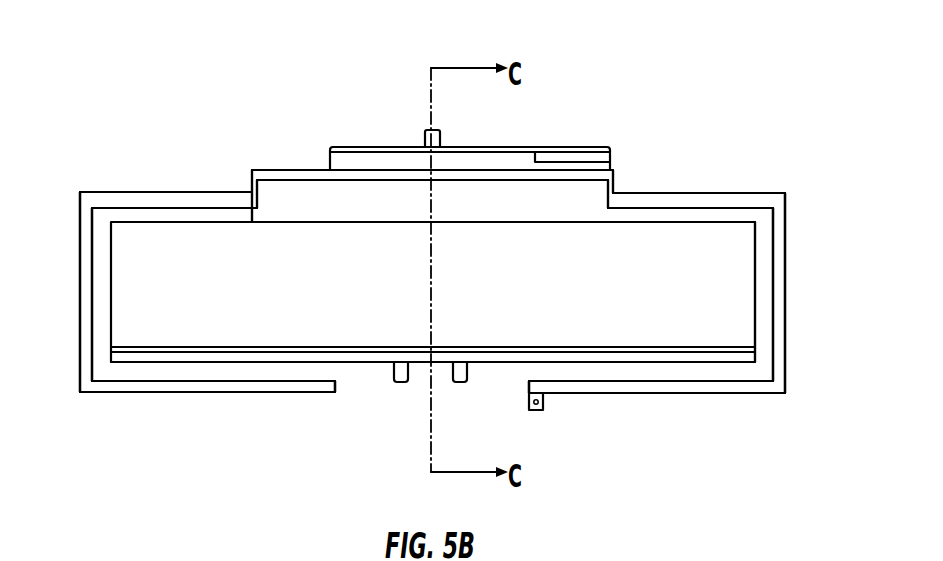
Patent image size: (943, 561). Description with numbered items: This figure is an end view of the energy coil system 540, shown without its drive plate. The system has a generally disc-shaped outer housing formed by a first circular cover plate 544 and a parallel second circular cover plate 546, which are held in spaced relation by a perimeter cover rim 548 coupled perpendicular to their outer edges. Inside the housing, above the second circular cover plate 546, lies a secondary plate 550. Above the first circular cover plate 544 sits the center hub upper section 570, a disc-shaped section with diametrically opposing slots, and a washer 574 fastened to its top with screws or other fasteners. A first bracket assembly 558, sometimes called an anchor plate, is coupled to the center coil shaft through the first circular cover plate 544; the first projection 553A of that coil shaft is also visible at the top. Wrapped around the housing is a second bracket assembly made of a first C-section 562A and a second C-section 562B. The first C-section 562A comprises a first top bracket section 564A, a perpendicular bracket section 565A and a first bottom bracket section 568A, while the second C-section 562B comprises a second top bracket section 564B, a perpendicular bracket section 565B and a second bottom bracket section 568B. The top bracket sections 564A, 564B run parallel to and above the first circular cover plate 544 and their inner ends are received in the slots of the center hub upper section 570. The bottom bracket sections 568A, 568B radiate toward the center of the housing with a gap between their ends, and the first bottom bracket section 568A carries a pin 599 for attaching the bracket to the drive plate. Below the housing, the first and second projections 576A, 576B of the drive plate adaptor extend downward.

The energy coil system 540 is at (479, 33).
The first circular cover plate 544 is at (723, 220).
The second circular cover plate 546 is at (223, 357).
The perimeter cover rim 548 is at (713, 322).
The secondary plate 550 is at (298, 348).
The first projection 553A is at (424, 136).
The first bracket assembly 558 is at (582, 150).
The first C-section 562A is at (802, 298).
The second C-section 562B is at (148, 408).
The first top bracket section 564A is at (675, 203).
The second top bracket section 564B is at (178, 197).
The perpendicular bracket section 565A is at (780, 263).
The perpendicular bracket section 565B is at (85, 230).
The first bottom bracket section 568A is at (692, 387).
The second bottom bracket section 568B is at (168, 387).
The center hub upper section 570 is at (592, 195).
The washer 574 is at (300, 168).
The first projection 576A is at (460, 383).
The second projection 576B is at (401, 383).
The pin 599 is at (537, 412).